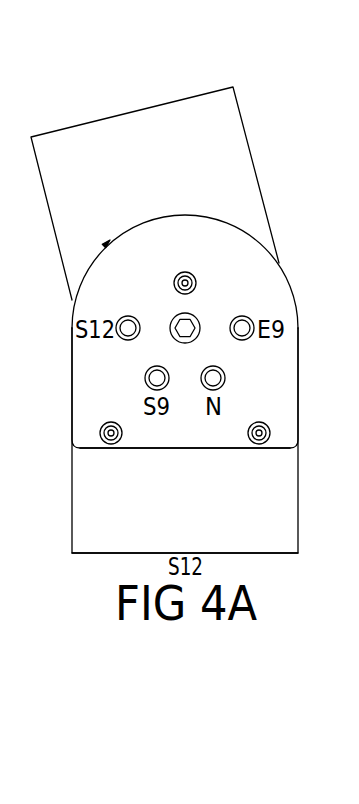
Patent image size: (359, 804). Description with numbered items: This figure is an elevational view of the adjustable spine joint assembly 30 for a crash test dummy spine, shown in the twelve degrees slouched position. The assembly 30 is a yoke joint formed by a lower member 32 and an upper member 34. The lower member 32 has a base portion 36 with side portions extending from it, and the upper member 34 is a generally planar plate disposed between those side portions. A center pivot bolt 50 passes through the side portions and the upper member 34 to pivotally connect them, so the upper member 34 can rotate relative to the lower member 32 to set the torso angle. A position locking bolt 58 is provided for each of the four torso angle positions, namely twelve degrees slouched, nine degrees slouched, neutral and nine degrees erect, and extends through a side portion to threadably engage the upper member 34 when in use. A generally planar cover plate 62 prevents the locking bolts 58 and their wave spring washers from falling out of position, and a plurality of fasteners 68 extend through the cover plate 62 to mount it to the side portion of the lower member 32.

The adjustable spine joint assembly 30 is at (148, 58).
The lower member 32 is at (300, 516).
The upper member 34 is at (110, 114).
The base portion 36 is at (272, 478).
The center pivot bolt 50 is at (196, 339).
The position locking bolt 58 is at (119, 320).
The cover plate 62 is at (280, 292).
The fastener 68 is at (174, 283).